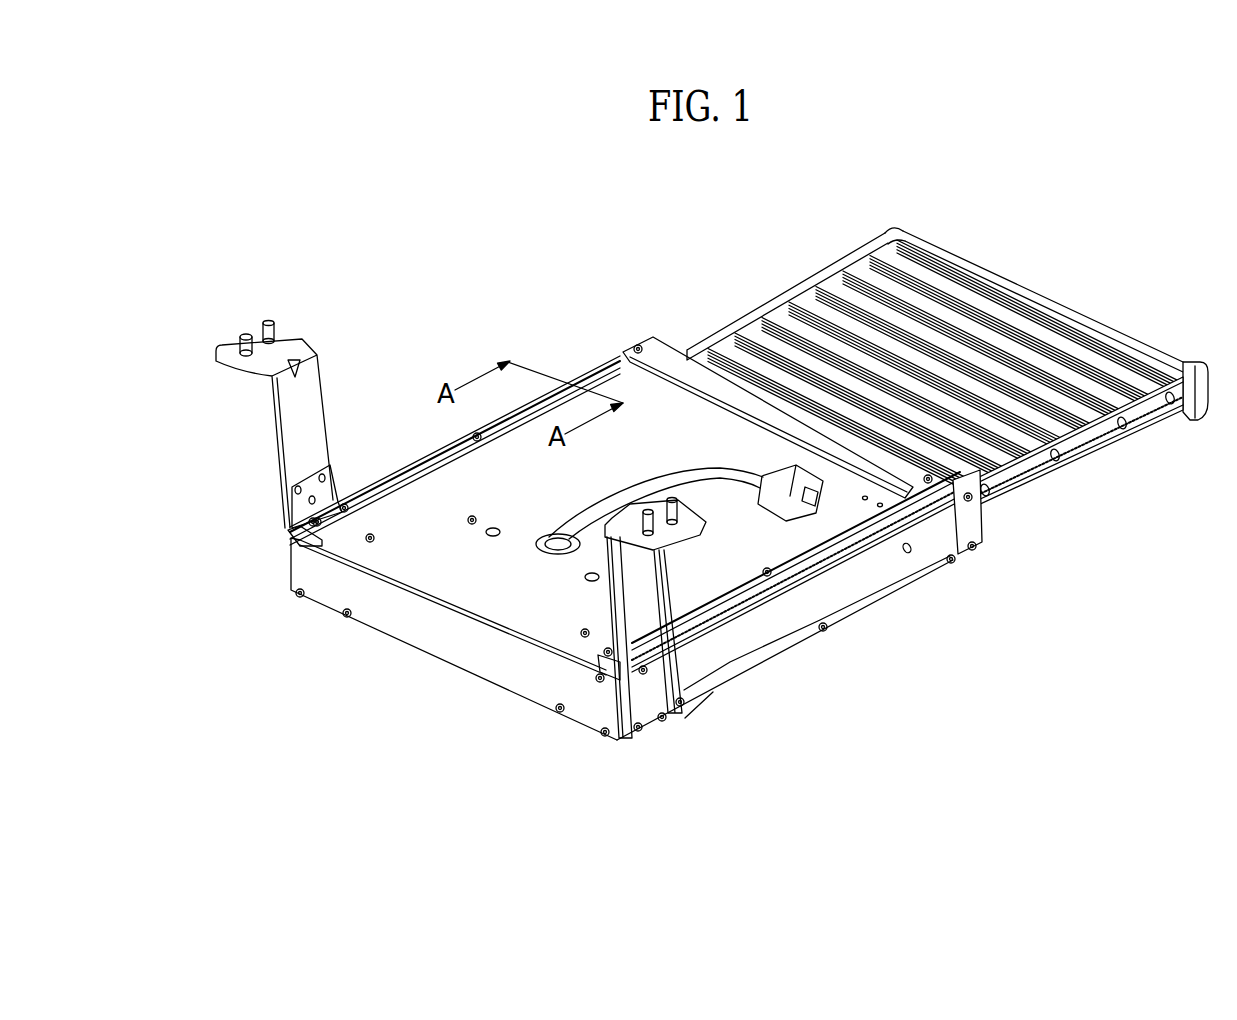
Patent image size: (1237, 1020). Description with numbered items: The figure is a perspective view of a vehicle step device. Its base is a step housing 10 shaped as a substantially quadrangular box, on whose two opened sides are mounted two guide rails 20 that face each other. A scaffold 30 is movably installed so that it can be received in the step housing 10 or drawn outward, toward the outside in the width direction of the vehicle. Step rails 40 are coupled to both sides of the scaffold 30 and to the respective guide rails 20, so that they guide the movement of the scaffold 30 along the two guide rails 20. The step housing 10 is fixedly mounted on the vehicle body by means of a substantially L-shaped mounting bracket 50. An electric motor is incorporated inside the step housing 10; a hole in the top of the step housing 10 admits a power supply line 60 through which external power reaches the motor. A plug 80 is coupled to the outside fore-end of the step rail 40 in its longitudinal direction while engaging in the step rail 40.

The step housing 10 is at (460, 653).
The guide rail 20 is at (400, 473).
The scaffold 30 is at (1050, 292).
The step rail 40 is at (762, 300).
The mounting bracket 50 is at (277, 438).
The power supply line 60 is at (728, 480).
The plug 80 is at (895, 228).